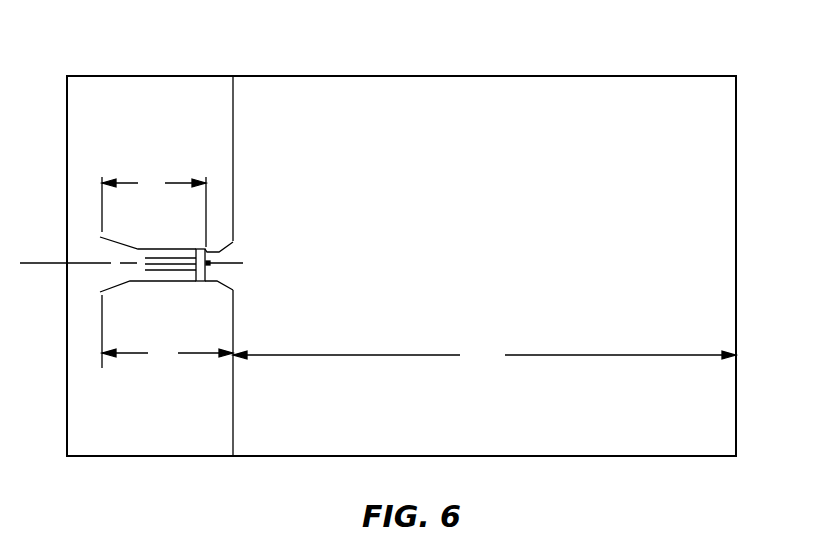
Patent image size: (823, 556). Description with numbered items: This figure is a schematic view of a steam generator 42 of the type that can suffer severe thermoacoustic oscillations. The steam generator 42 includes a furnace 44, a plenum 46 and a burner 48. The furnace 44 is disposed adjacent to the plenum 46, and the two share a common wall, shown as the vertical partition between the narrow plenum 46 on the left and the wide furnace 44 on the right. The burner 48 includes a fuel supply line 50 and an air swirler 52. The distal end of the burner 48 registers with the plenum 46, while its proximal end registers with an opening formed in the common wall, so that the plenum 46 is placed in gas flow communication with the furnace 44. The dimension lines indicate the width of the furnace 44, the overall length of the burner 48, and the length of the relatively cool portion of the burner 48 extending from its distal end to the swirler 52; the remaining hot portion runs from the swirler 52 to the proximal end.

The steam generator 42 is at (473, 66).
The furnace 44 is at (490, 243).
The plenum 46 is at (170, 132).
The burner 48 is at (153, 282).
The fuel supply line 50 is at (186, 274).
The air swirler 52 is at (208, 253).